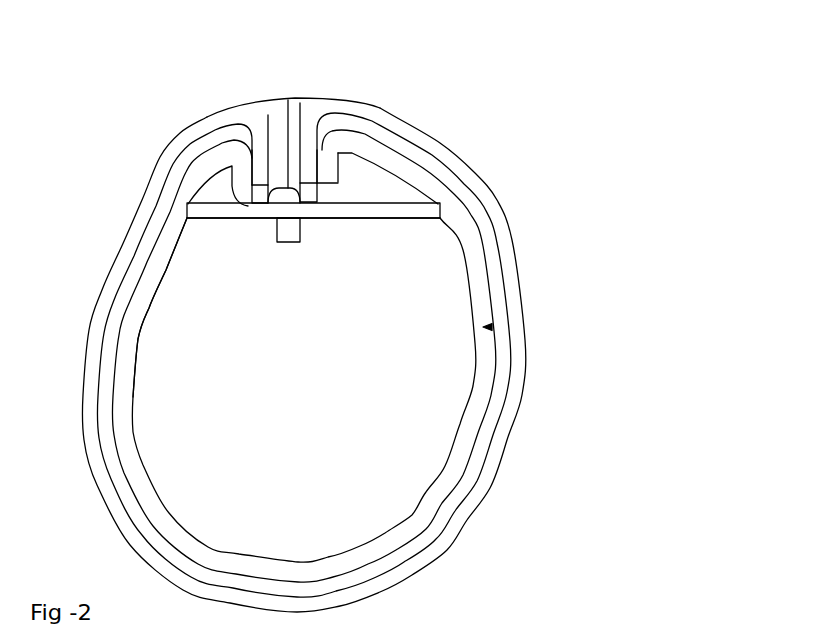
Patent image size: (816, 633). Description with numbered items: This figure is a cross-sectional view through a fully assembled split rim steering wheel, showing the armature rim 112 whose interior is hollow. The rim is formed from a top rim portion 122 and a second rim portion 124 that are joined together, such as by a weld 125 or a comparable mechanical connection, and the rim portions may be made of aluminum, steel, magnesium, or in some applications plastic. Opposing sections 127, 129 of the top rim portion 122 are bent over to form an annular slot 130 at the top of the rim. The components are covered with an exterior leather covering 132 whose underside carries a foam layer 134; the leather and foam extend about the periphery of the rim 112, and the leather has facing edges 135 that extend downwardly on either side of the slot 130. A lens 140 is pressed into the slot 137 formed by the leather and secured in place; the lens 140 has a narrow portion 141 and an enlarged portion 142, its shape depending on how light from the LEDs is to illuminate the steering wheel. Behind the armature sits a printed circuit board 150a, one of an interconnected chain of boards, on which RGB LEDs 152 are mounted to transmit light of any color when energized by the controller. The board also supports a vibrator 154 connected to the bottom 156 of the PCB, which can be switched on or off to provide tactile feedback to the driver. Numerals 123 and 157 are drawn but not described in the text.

The rim 112 is at (281, 355).
The top rim portion 122 is at (143, 328).
The weld cup 123 is at (346, 188).
The rim portion 124 is at (150, 478).
The weld 125 is at (117, 403).
The opposing section 127 is at (250, 150).
The opposing section 129 is at (341, 192).
The annular slot 130 is at (324, 150).
The leather covering 132 is at (142, 200).
The foam layer 134 is at (137, 252).
The facing edges 135 is at (256, 116).
The slot 137 is at (274, 125).
The lens 140 is at (291, 112).
The narrow portion 141 is at (252, 219).
The enlarged portion 142 is at (268, 160).
The printed circuit board 150a is at (196, 220).
The LED 152 is at (318, 128).
The vibrator 154 is at (301, 233).
The bottom of the PCB 156 is at (387, 218).
The interior cavity 157 is at (328, 365).